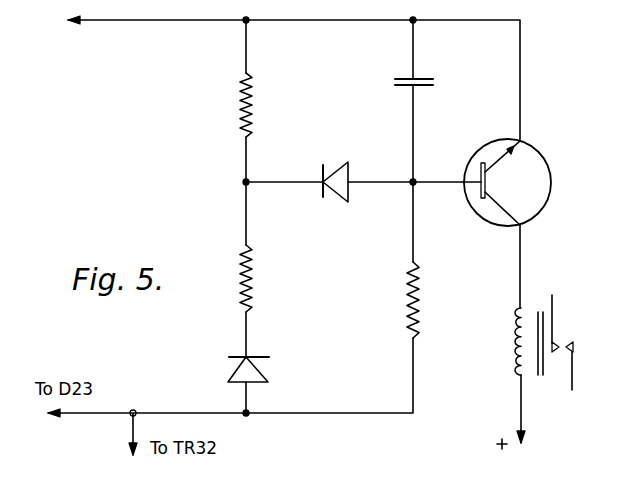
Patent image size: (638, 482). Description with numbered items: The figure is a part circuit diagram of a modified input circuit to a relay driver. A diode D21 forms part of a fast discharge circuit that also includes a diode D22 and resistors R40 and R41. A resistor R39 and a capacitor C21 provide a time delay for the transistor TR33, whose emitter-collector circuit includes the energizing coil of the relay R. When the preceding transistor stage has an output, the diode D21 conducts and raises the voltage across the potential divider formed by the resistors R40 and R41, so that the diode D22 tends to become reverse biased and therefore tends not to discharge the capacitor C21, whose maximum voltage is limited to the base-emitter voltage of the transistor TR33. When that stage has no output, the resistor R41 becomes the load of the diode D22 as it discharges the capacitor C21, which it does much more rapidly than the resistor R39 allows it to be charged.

The resistor R41 is at (267, 105).
The resistor R40 is at (268, 278).
The resistor R39 is at (385, 300).
The capacitor C21 is at (427, 67).
The diode D22 is at (340, 188).
The diode D21 is at (268, 377).
The transistor TR33 is at (535, 158).
The relay R is at (515, 341).